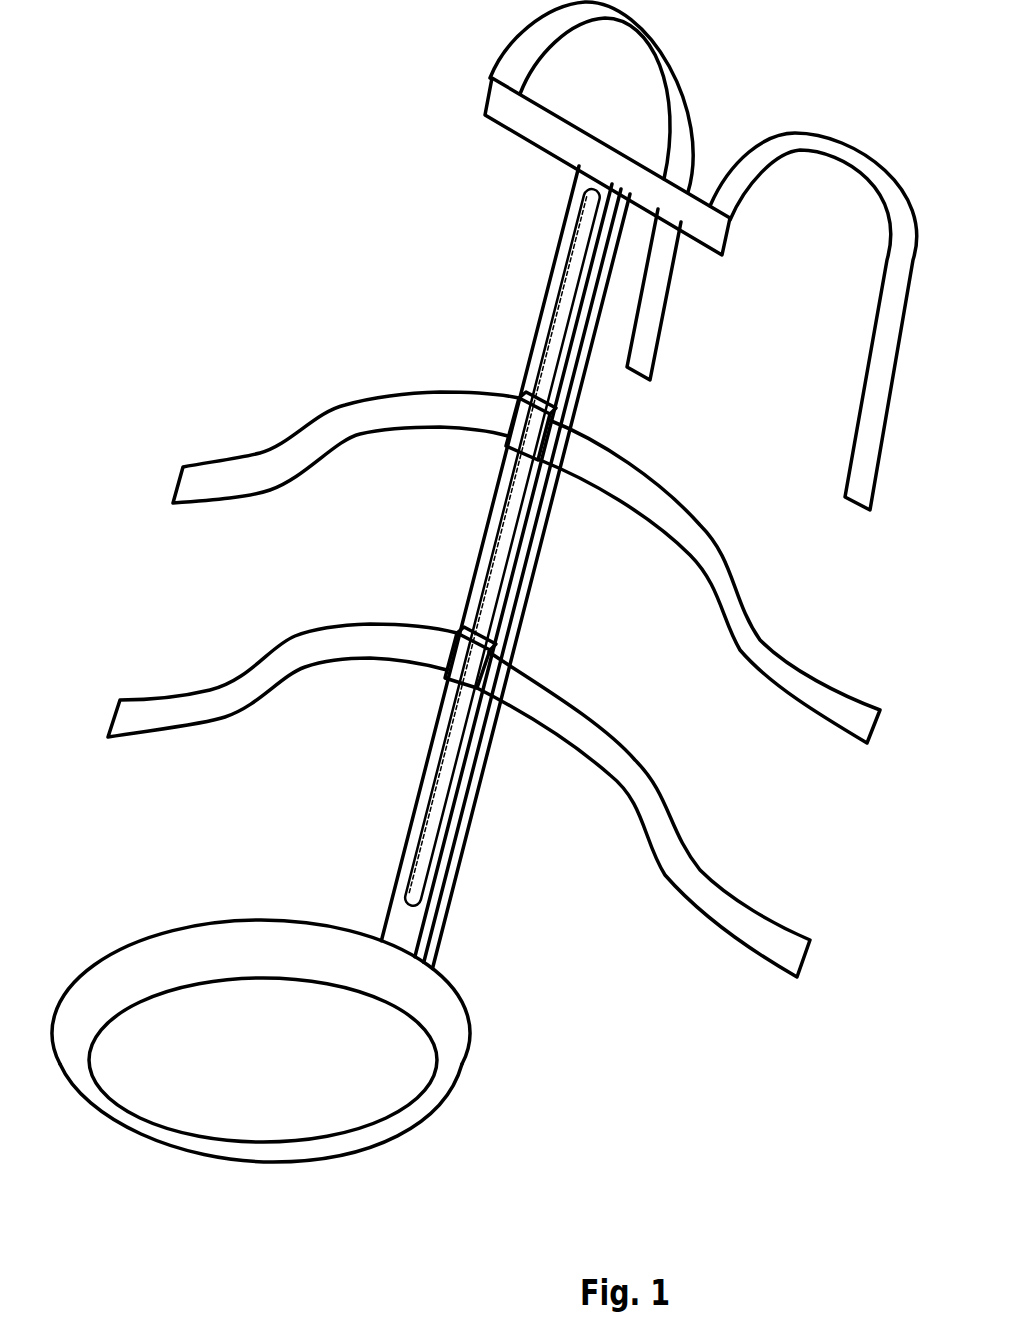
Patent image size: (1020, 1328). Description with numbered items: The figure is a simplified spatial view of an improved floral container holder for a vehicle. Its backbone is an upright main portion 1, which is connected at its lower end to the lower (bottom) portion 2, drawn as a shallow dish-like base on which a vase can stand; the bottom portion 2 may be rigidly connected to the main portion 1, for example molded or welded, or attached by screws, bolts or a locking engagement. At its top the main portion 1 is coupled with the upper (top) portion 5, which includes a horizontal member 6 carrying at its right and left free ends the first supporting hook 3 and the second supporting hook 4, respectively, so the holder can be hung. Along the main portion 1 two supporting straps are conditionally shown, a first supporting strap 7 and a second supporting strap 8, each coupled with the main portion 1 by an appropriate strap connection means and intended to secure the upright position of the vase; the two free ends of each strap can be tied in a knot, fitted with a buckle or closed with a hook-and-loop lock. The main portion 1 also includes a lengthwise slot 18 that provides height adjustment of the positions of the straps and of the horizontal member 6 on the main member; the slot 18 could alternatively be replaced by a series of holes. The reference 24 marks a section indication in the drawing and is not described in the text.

The main portion 1 is at (512, 610).
The lower (bottom) portion 2 is at (460, 1040).
The first supporting hook 3 is at (883, 365).
The second supporting hook 4 is at (643, 340).
The upper (top) portion 5 is at (637, 256).
The horizontal member 6 is at (550, 133).
The first supporting strap 7 is at (727, 597).
The second supporting strap 8 is at (727, 910).
The slot 18 is at (428, 850).
The section line 24 is at (300, 572).